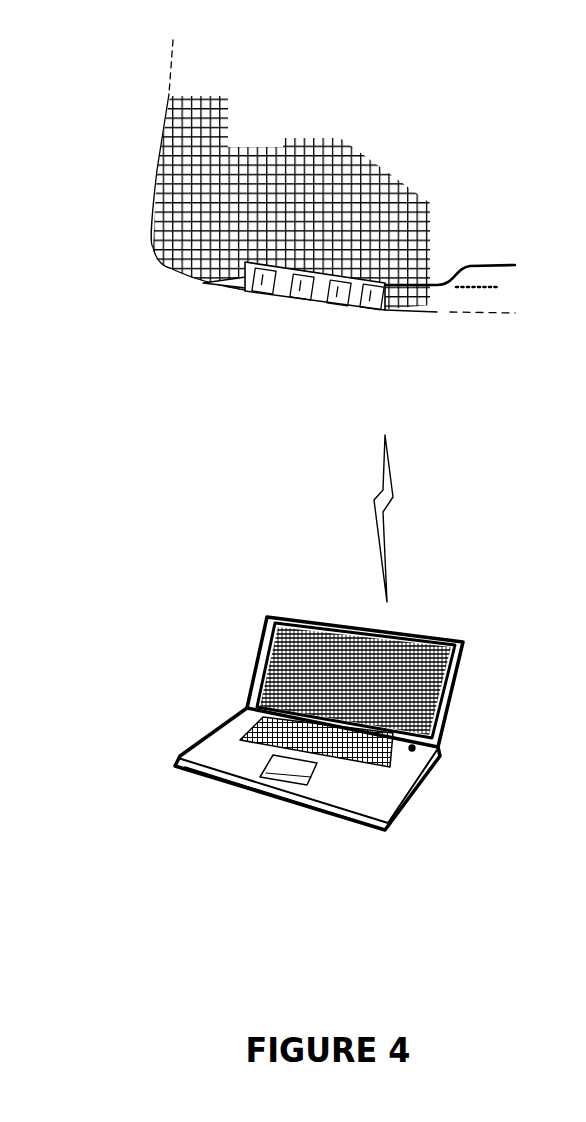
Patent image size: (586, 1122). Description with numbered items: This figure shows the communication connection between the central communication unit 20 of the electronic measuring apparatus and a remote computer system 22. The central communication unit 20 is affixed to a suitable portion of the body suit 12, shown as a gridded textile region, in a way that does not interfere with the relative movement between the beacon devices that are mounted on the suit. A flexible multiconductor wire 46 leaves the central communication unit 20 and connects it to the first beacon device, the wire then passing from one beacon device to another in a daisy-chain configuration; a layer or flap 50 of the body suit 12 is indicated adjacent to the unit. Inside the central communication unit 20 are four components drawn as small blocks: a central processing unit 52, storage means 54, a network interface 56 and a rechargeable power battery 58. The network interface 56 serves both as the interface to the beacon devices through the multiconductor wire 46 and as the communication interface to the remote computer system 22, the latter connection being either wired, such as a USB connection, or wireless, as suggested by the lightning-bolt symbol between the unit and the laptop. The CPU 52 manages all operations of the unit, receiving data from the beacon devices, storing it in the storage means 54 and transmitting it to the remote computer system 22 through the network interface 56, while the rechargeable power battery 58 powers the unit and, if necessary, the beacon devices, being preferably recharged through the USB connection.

The body suit 12 is at (160, 141).
The central communication unit 20 is at (317, 268).
The remote computer system 22 is at (443, 621).
The flexible multiconductor wire 46 is at (437, 283).
The fabric layer 50 is at (213, 289).
The central processing unit 52 is at (263, 294).
The storage means 54 is at (299, 299).
The network interface 56 is at (337, 302).
The rechargeable power battery 58 is at (377, 301).